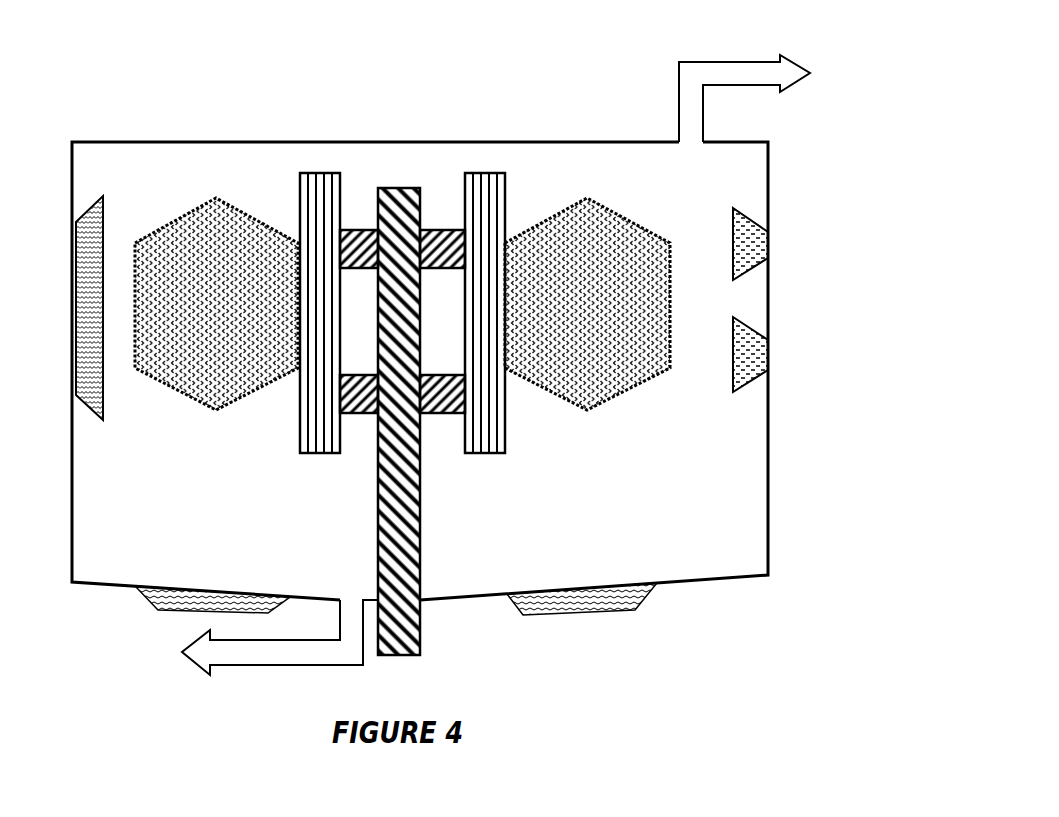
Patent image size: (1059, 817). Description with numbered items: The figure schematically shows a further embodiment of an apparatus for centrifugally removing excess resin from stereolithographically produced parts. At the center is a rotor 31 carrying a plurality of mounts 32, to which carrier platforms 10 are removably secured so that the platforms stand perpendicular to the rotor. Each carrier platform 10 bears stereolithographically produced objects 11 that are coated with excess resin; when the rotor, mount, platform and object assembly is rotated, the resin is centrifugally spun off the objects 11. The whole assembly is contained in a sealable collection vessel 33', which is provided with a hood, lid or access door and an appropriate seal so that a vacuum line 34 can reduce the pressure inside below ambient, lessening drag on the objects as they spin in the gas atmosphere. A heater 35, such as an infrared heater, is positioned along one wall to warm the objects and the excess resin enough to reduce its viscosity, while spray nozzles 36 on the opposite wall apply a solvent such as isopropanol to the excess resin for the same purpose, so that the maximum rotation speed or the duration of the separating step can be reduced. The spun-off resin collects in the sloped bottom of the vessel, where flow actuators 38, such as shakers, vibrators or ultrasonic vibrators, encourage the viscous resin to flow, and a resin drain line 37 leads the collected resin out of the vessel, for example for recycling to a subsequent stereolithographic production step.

The sealable collection vessel 33' is at (420, 332).
The vacuum line 34 is at (692, 97).
The heater 35 is at (104, 380).
The spray nozzles 36 is at (747, 245).
The resin drain line 37 is at (362, 667).
The flow actuators 38 is at (158, 610).
The rotor 31 is at (400, 522).
The mounts 32 is at (358, 246).
The carrier platform 10 is at (402, 313).
The stereolithographically produced objects 11 is at (402, 304).